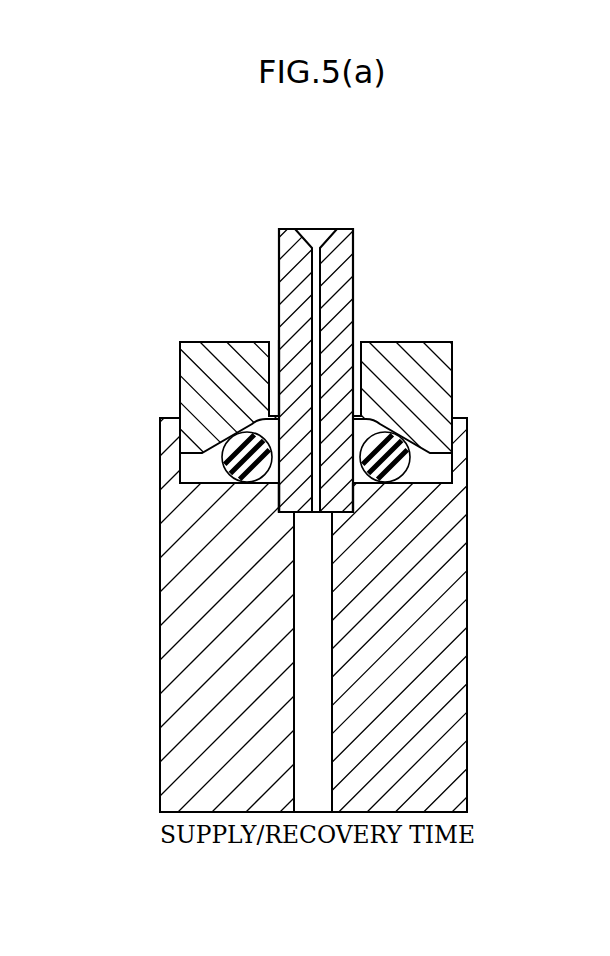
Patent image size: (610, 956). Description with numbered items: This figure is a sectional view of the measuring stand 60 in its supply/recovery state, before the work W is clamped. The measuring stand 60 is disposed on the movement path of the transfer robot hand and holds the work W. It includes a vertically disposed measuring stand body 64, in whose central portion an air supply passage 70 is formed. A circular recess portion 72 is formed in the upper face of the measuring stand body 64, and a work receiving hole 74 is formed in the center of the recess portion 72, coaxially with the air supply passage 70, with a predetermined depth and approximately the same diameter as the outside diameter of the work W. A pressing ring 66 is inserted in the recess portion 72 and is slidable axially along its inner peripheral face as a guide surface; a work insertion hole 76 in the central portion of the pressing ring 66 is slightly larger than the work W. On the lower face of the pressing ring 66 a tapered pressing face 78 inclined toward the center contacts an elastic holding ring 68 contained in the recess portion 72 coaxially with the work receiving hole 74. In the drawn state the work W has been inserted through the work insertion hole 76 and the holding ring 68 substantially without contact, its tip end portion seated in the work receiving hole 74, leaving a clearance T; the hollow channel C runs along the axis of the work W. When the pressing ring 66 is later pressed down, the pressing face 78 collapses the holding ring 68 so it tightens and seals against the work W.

The measuring stand 60 is at (532, 404).
The measuring stand body 64 is at (468, 703).
The pressing ring 66 is at (179, 372).
The holding ring 68 is at (223, 462).
The air supply passage 70 is at (305, 713).
The recess portion 72 is at (442, 426).
The work receiving hole 74 is at (348, 497).
The work insertion hole 76 is at (278, 340).
The pressing face 78 is at (412, 456).
The channel C is at (313, 228).
The work W is at (355, 260).
The gap T is at (280, 512).